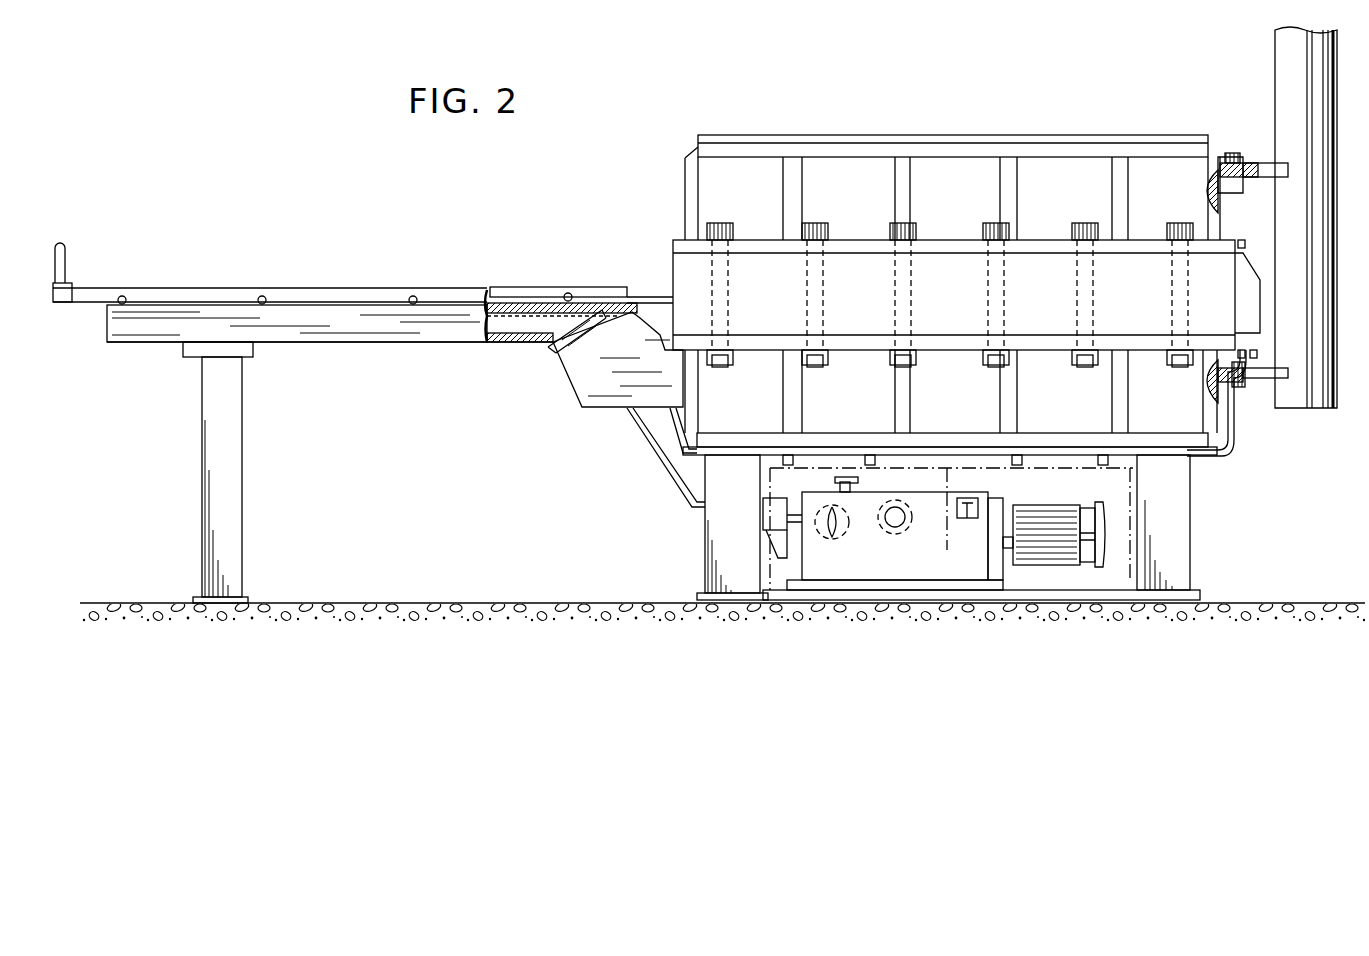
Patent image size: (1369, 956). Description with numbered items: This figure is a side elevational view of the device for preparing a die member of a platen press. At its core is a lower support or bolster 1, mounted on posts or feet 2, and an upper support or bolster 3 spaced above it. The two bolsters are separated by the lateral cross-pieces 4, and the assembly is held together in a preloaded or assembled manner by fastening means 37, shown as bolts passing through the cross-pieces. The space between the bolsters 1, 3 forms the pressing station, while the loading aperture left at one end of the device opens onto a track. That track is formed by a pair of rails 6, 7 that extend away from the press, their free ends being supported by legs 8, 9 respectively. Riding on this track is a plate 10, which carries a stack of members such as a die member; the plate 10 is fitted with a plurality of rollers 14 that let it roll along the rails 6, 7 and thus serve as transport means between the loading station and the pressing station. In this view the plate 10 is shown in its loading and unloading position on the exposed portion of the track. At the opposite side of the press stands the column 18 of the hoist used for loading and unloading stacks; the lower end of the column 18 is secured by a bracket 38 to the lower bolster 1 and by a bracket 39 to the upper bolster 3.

The lower support or bolster 1 is at (713, 412).
The posts or feet 2 is at (715, 545).
The upper support or bolster 3 is at (740, 167).
The lateral cross-pieces 4 is at (680, 268).
The rail 6 is at (445, 327).
The rail 7 is at (330, 289).
The leg 8 is at (235, 458).
The leg 9 is at (252, 522).
The plate 10 is at (283, 293).
The rollers 14 is at (260, 295).
The column 18 is at (1328, 130).
The fastening means (bolts) 37 is at (805, 308).
The bracket 38 is at (1258, 386).
The bracket 39 is at (1250, 160).